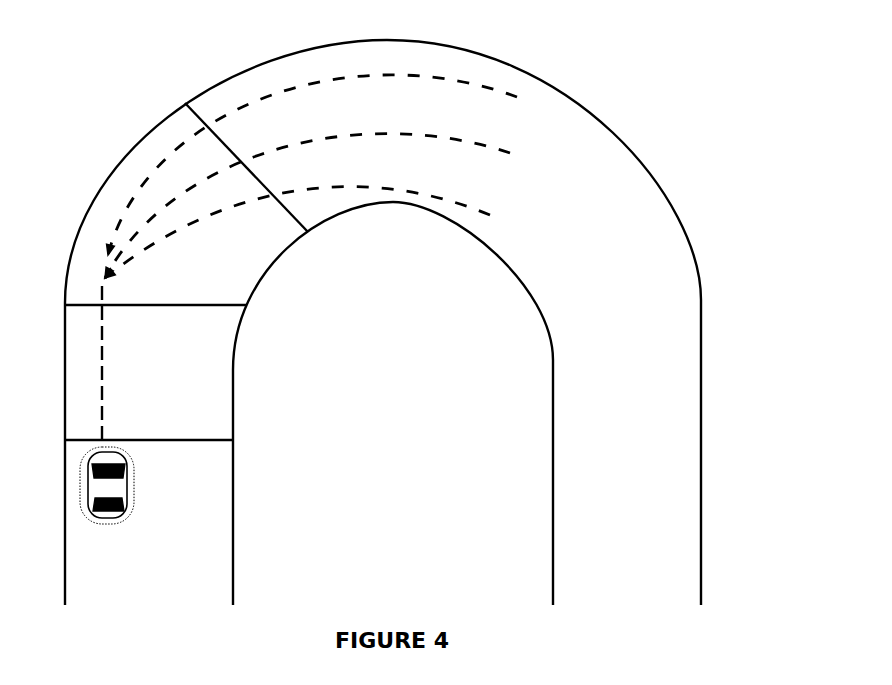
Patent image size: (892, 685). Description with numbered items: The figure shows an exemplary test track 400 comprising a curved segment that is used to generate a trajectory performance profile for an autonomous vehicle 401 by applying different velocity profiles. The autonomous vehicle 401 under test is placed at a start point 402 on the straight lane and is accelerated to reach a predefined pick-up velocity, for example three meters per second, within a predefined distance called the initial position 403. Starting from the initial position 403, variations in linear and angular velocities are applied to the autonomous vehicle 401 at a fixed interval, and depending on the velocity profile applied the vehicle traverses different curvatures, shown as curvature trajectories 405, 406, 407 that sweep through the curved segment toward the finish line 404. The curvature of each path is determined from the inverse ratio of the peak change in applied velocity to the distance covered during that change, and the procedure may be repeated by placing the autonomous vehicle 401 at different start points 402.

The test track 400 is at (692, 160).
The autonomous vehicle 401 is at (140, 493).
The start point 402 is at (217, 438).
The initial position 403 is at (247, 304).
The finish line 404 is at (198, 112).
The curvature trajectory 405 is at (398, 76).
The curvature trajectory 406 is at (515, 143).
The curvature trajectory 407 is at (487, 205).